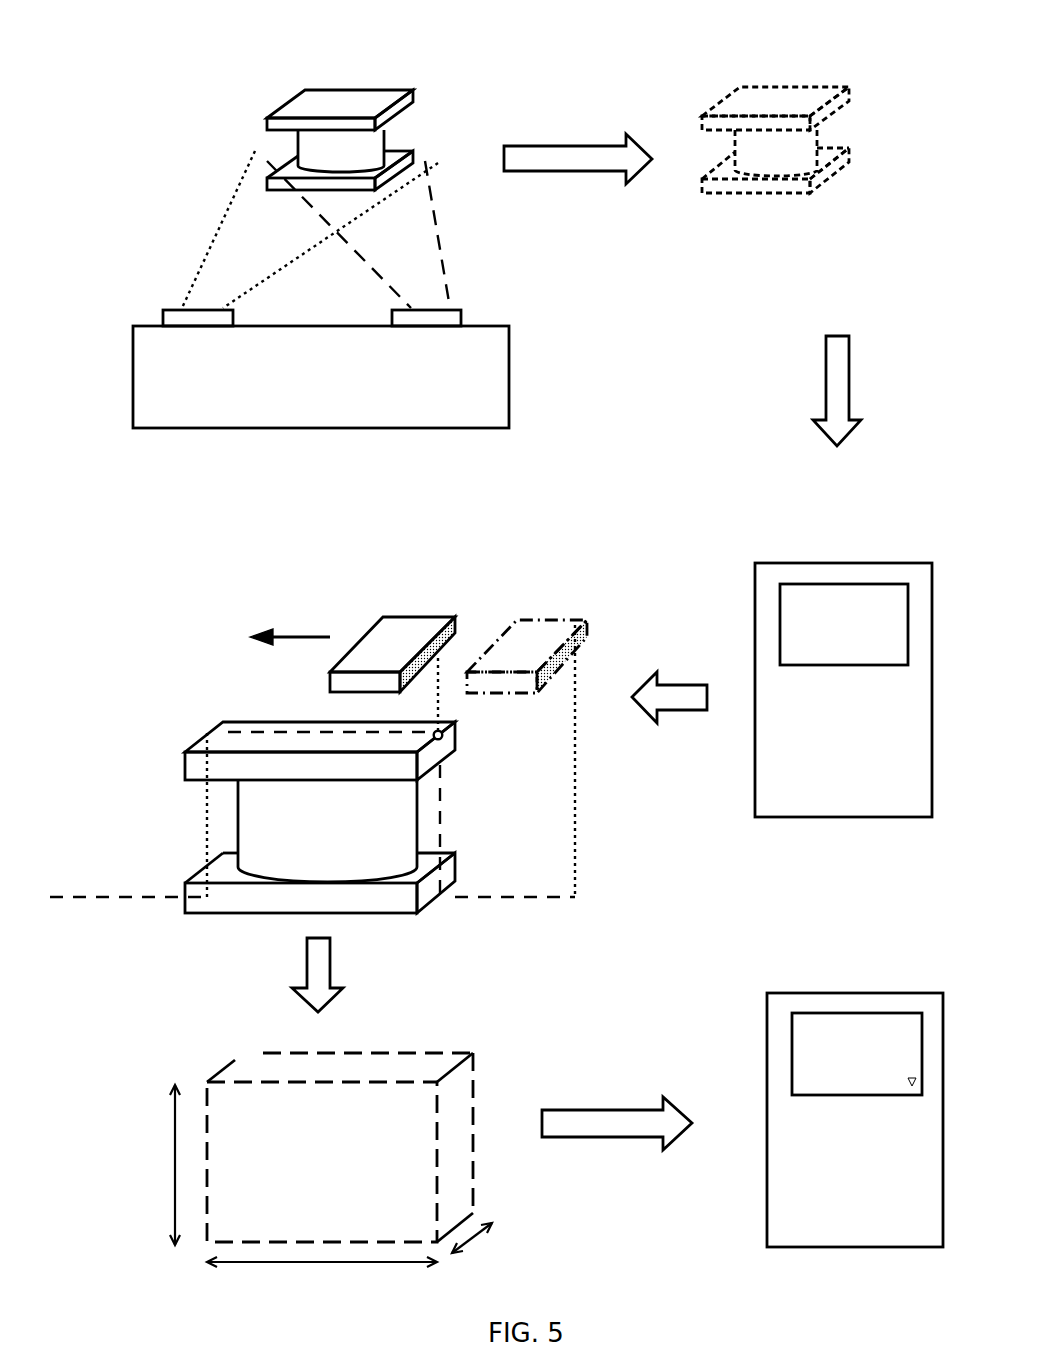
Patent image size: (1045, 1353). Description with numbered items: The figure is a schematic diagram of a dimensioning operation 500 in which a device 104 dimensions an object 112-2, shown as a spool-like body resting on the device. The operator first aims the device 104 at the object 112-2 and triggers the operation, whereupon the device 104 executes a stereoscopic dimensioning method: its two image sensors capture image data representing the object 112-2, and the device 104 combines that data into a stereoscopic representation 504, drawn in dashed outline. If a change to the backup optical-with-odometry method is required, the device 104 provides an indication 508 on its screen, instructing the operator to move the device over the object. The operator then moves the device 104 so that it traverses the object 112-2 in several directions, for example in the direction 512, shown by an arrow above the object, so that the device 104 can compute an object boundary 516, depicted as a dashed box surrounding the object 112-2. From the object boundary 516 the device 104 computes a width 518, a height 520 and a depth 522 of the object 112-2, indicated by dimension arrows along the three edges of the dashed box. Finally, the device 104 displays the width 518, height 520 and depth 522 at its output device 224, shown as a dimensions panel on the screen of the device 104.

The dimensioning operation 500 is at (191, 80).
The stereoscopic representation 504 is at (776, 87).
The device 104 is at (767, 1122).
The direction 512 is at (290, 624).
The object 112-2 is at (185, 767).
The indication 508 is at (899, 580).
The object boundary 516 is at (235, 1060).
The width 518 is at (322, 1279).
The height 520 is at (147, 1165).
The depth 522 is at (489, 1244).
The output device 224 is at (792, 1053).